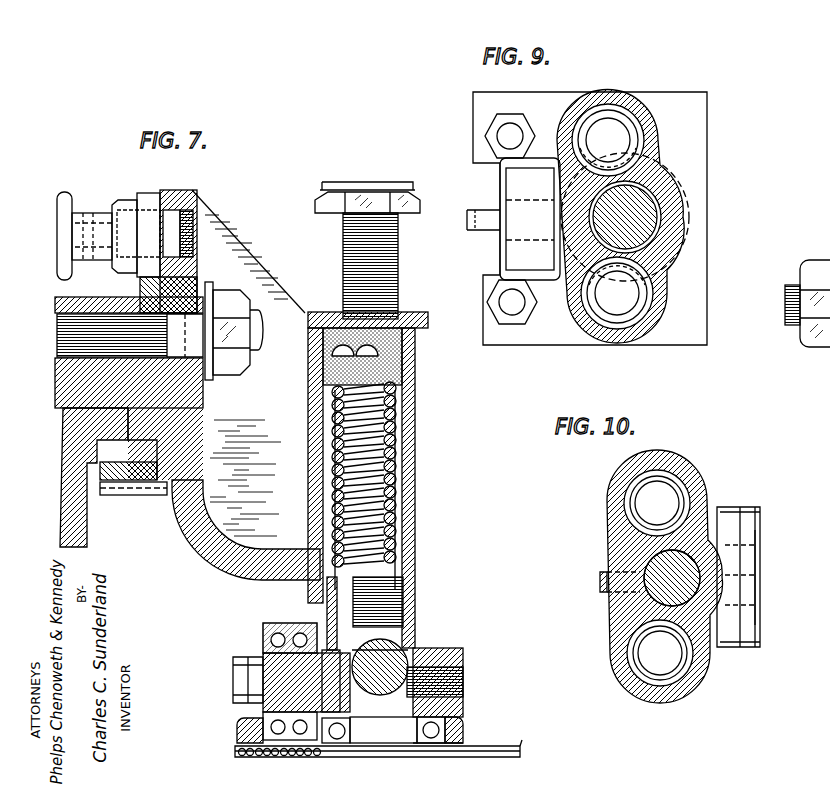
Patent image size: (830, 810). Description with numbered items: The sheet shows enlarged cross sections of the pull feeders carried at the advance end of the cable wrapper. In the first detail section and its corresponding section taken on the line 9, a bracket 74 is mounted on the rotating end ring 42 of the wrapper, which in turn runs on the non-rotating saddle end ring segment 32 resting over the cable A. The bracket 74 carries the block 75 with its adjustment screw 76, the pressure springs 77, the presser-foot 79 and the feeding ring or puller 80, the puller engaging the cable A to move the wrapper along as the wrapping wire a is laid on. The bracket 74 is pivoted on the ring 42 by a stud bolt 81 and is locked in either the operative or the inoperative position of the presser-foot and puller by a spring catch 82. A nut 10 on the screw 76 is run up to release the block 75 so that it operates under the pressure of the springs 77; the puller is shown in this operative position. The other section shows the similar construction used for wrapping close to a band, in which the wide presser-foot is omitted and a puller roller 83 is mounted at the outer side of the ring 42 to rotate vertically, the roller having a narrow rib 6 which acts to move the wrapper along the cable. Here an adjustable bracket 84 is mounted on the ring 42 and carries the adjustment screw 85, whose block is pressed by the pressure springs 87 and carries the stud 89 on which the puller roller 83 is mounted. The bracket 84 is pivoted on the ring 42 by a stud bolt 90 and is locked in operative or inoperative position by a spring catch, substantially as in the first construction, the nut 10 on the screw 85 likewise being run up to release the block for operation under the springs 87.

In FIG. 7, the nut 10 is at (372, 200).
In FIG. 7, the adjustment screw 76 is at (353, 244).
In FIG. 9, the adjustment screw 76 is at (633, 207).
In FIG. 7, the pressure springs 77 is at (397, 460).
In FIG. 9, the pressure springs 77 is at (633, 137).
In FIG. 7, the bracket 74 is at (224, 553).
In FIG. 9, the bracket 74 is at (672, 223).
In FIG. 7, the block 75 is at (462, 665).
In FIG. 7, the presser-foot 79 is at (265, 631).
In FIG. 9, the presser-foot 79 is at (517, 184).
In FIG. 7, the feeding ring or puller 80 is at (446, 753).
In FIG. 9, the feeding ring or puller 80 is at (692, 210).
In FIG. 7, the stud bolt 81 is at (187, 328).
In FIG. 7, the spring catch 82 is at (170, 226).
In FIG. 7, the end ring segment 32 is at (77, 520).
In FIG. 10, the end ring segment 32 is at (829, 460).
In FIG. 7, the end ring 42 is at (160, 455).
In FIG. 10, the end ring 42 is at (829, 380).
In FIG. 7, the section line 9 is at (262, 613).
In FIG. 7, the cable A is at (500, 750).
In FIG. 7, the wrapping wire a is at (243, 749).
In FIG. 10, the adjustable bracket 84 is at (627, 543).
In FIG. 10, the adjustment screw 85 is at (633, 604).
In FIG. 10, the pressure springs 87 is at (682, 500).
In FIG. 10, the narrow rib 6 is at (733, 508).
In FIG. 10, the stud 89 is at (748, 575).
In FIG. 10, the puller roller 83 is at (754, 620).
In FIG. 10, the stud bolt 90 is at (812, 258).